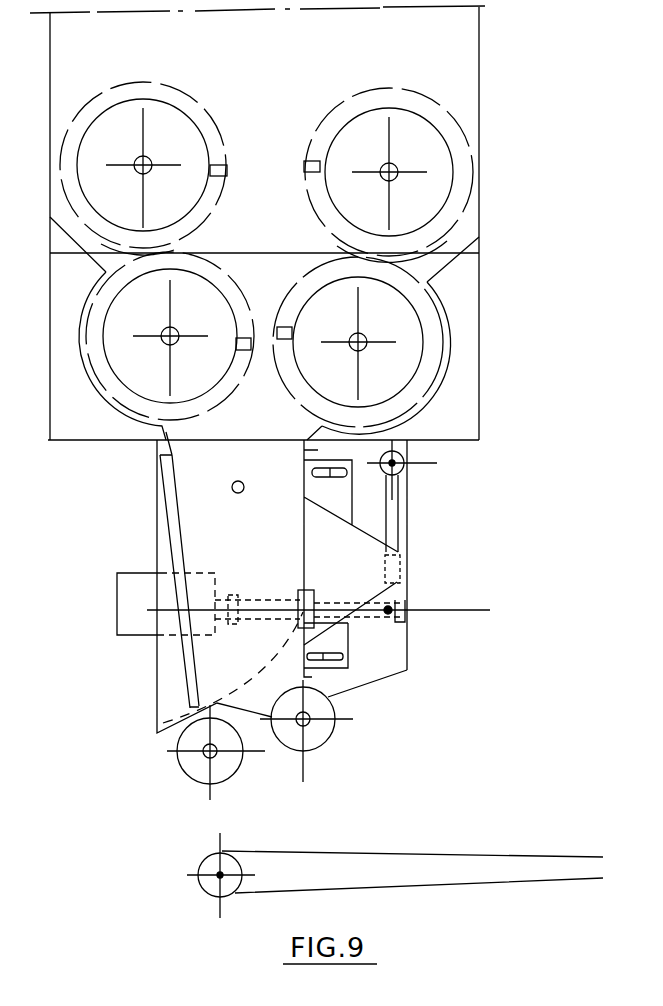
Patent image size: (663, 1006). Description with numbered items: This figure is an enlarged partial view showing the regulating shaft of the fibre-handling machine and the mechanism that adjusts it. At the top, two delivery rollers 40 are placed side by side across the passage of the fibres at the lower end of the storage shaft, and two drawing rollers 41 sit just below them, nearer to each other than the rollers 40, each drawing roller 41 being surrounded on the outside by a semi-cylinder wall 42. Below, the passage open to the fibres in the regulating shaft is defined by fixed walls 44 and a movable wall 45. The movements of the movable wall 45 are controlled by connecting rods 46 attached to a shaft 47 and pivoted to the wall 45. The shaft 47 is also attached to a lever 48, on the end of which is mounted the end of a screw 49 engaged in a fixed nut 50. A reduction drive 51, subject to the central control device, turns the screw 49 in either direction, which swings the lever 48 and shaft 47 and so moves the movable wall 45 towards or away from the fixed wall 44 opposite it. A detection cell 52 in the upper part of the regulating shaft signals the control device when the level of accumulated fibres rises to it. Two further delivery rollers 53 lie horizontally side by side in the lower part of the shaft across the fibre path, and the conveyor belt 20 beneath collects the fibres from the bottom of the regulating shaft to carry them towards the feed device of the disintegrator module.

The conveyor belt 20 is at (333, 850).
The delivery roller 40 is at (192, 120).
The drawing roller 41 is at (218, 296).
The semi-cylinder wall 42 is at (95, 383).
The fixed wall 44 is at (283, 579).
The movable wall 45 is at (305, 535).
The connecting rod 46 is at (397, 596).
The shaft 47 is at (410, 461).
The lever 48 is at (395, 522).
The screw 49 is at (378, 632).
The fixed nut 50 is at (155, 735).
The reduction drive 51 is at (137, 626).
The detection cell 52 is at (236, 493).
The delivery roller 53 is at (230, 768).